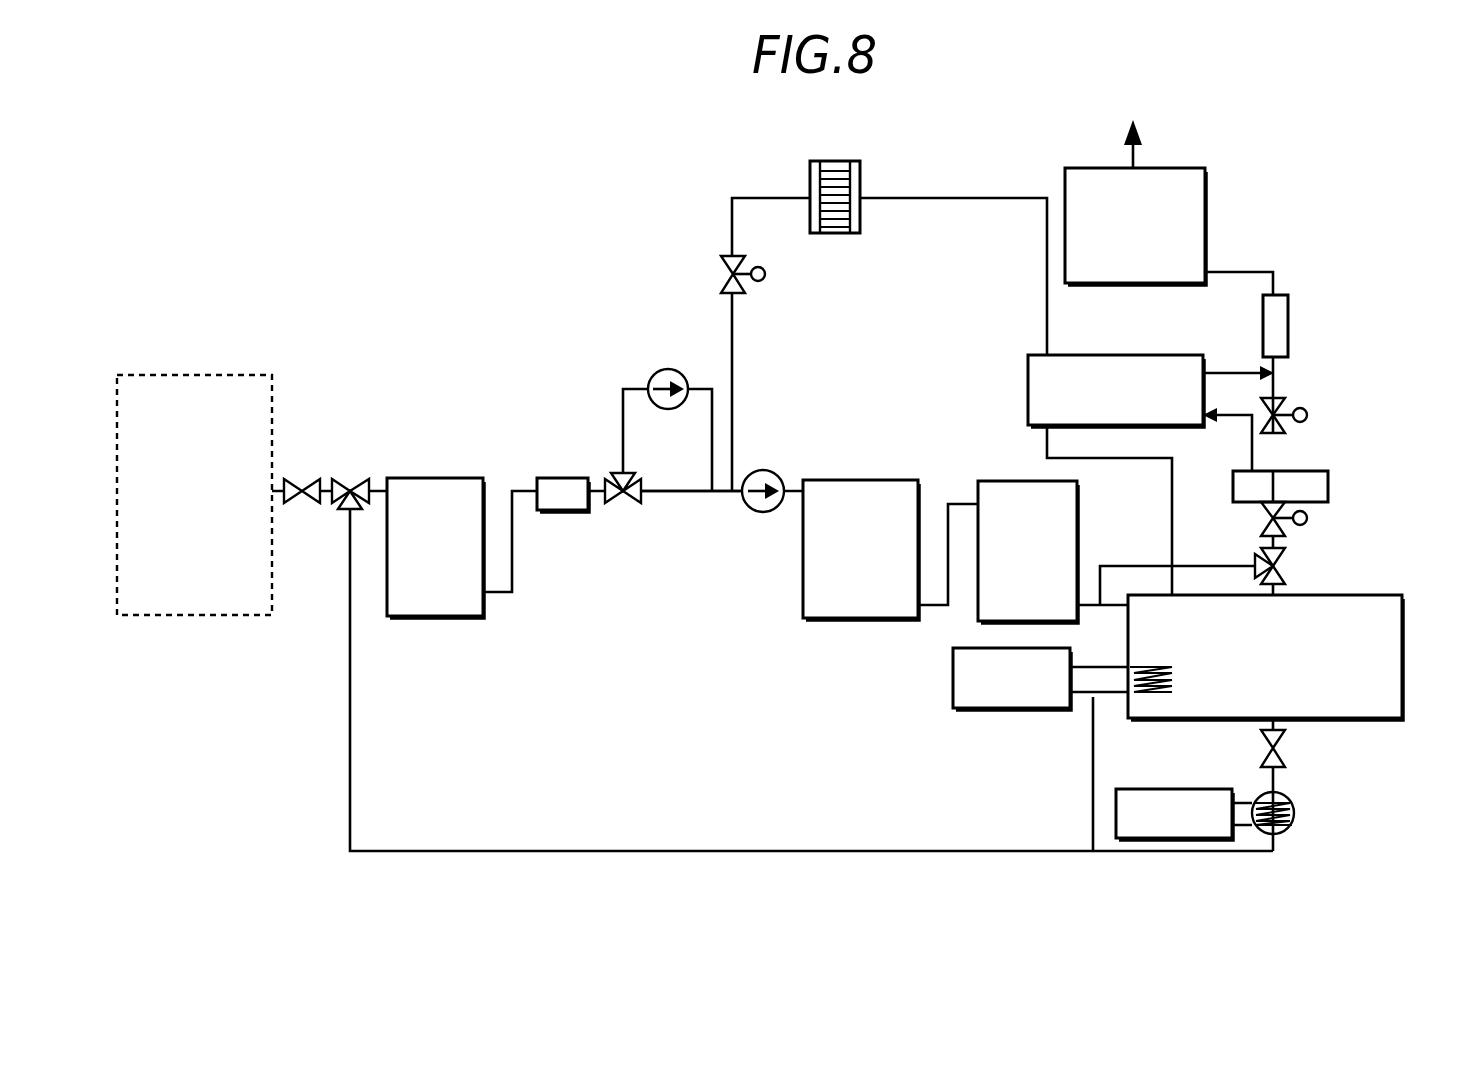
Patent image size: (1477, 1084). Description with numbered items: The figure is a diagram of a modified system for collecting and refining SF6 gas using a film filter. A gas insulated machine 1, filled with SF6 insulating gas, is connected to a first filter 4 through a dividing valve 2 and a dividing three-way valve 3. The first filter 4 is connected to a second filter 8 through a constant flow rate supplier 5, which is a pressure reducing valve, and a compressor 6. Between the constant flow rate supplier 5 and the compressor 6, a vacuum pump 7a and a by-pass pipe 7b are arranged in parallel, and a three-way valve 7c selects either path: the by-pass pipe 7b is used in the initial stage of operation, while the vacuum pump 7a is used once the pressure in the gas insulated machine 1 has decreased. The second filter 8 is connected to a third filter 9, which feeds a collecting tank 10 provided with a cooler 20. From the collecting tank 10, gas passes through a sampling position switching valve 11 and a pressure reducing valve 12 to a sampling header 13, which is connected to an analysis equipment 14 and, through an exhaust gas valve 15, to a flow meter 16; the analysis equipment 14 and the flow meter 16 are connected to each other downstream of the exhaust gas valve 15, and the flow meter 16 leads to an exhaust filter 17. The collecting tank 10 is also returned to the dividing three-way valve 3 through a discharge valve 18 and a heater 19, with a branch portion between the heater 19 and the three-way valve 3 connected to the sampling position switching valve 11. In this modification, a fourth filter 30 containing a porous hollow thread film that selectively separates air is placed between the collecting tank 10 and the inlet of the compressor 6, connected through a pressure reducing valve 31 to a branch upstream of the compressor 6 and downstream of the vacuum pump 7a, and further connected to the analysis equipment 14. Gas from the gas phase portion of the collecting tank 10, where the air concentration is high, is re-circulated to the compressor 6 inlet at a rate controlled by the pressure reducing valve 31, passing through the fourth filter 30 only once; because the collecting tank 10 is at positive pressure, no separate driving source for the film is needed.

The gas insulated machine 1 is at (172, 375).
The dividing valve 2 is at (298, 480).
The dividing three-way valve 3 is at (350, 478).
The first filter 4 is at (425, 478).
The constant flow rate supplier 5 is at (560, 510).
The compressor 6 is at (773, 471).
The vacuum pump 7a is at (672, 369).
The by-pass pipe 7b is at (668, 494).
The three-way valve 7c is at (630, 496).
The second filter 8 is at (838, 480).
The third filter 9 is at (1038, 481).
The collecting tank 10 is at (1404, 640).
The sampling position switching valve 11 is at (1285, 572).
The pressure reducing valve 12 is at (1307, 518).
The sampling header 13 is at (1328, 478).
The analysis equipment 14 is at (1125, 355).
The exhaust gas valve 15 is at (1288, 404).
The flow meter 16 is at (1288, 326).
The exhaust filter 17 is at (1208, 210).
The discharge valve 18 is at (1283, 753).
The heater 19 is at (1143, 789).
The cooler 20 is at (953, 680).
The fourth filter 30 is at (840, 233).
The pressure reducing valve 31 is at (724, 272).